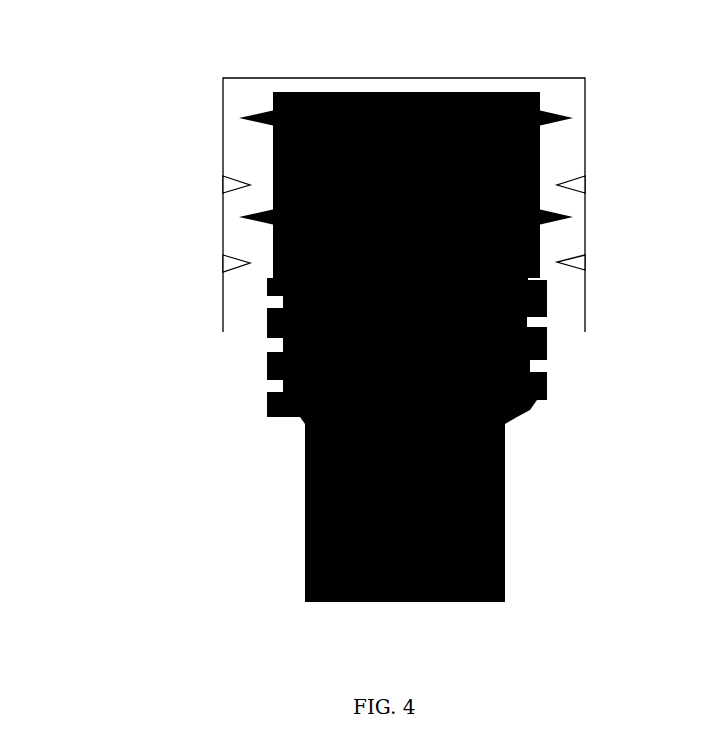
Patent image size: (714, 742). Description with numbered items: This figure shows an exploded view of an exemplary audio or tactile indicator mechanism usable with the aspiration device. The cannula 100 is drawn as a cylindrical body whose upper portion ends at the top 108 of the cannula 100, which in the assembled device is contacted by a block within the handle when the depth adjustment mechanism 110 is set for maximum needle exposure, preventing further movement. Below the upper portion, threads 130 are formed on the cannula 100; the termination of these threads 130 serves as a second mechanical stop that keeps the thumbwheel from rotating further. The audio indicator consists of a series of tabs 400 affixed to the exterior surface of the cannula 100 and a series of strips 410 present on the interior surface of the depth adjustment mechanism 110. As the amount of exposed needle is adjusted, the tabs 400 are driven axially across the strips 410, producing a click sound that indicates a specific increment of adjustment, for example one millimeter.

The cannula 100 is at (283, 543).
The top of the cannula 108 is at (490, 92).
The depth adjustment mechanism 110 is at (203, 91).
The threads 130 is at (565, 380).
The tabs 400 is at (230, 228).
The strips 410 is at (203, 177).